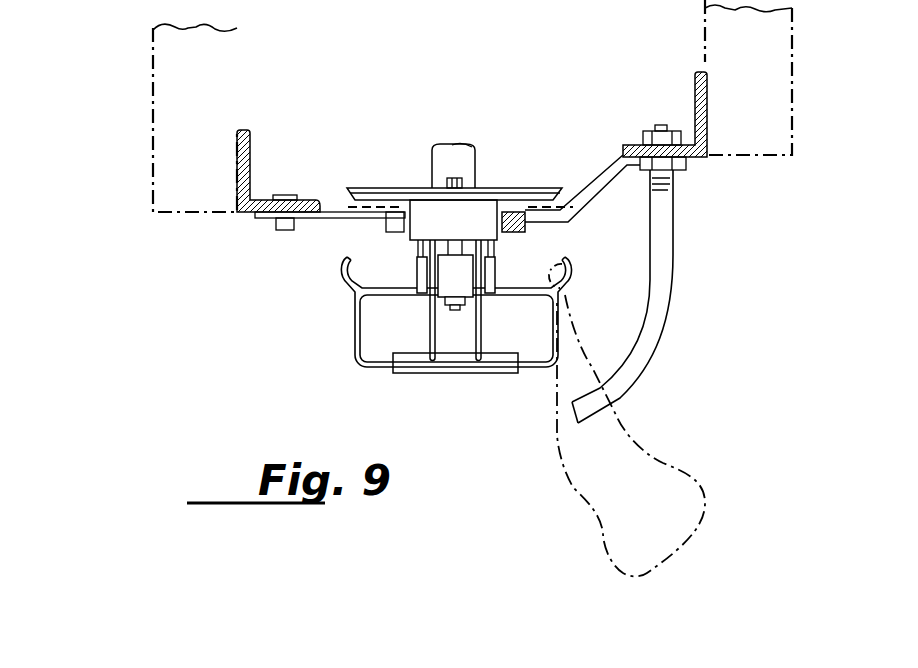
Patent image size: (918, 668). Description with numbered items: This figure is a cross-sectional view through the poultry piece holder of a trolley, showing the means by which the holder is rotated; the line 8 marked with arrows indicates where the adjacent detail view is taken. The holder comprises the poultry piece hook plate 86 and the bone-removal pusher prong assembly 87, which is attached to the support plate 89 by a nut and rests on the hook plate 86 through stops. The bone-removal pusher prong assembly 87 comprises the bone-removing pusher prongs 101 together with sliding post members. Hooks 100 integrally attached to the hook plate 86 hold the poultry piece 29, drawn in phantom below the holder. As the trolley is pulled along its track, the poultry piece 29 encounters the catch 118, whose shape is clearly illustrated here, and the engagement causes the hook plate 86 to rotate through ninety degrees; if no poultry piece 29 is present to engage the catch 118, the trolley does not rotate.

The section line 8— 8 is at (348, 200).
The support plate 89 is at (483, 197).
The hooks 100 is at (340, 262).
The poultry piece hook plate 86 is at (390, 291).
The bone-removing pusher prongs 101 is at (430, 327).
The bone-removal pusher prong assembly 87 is at (457, 363).
The catch 118 is at (657, 305).
The poultry piece 29 is at (663, 480).